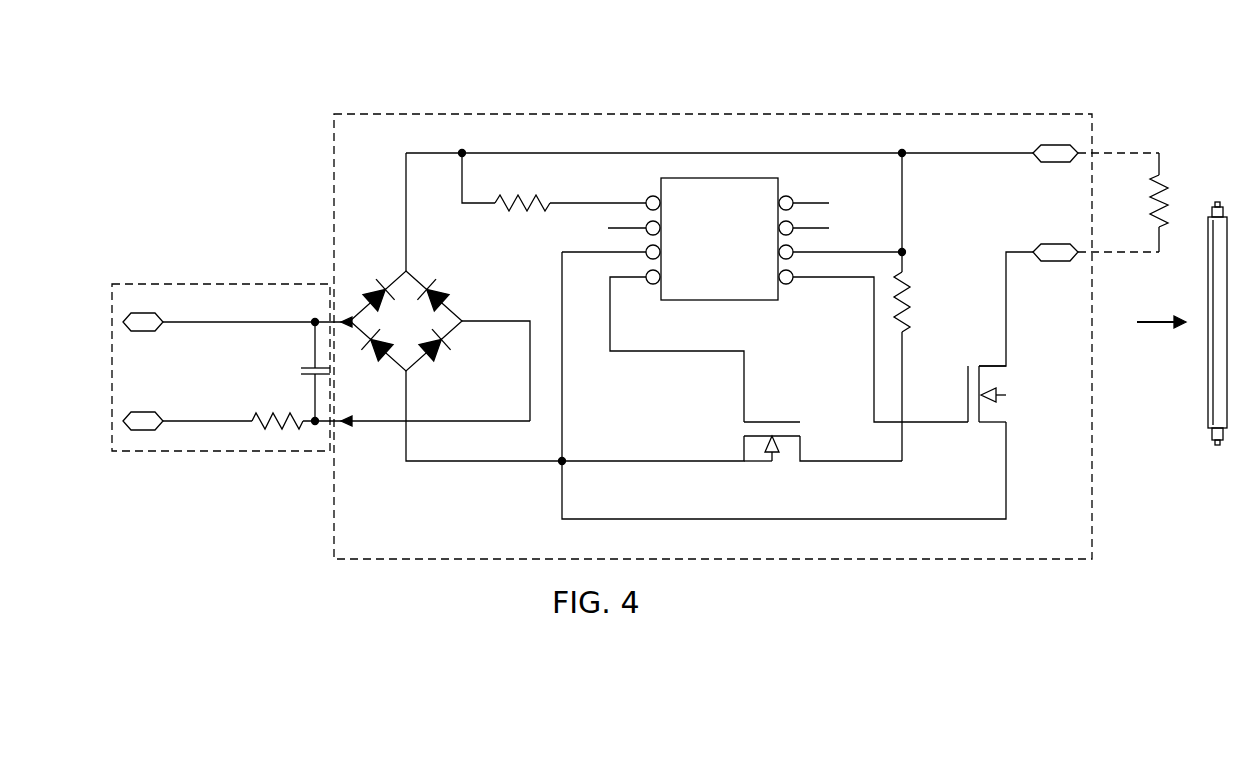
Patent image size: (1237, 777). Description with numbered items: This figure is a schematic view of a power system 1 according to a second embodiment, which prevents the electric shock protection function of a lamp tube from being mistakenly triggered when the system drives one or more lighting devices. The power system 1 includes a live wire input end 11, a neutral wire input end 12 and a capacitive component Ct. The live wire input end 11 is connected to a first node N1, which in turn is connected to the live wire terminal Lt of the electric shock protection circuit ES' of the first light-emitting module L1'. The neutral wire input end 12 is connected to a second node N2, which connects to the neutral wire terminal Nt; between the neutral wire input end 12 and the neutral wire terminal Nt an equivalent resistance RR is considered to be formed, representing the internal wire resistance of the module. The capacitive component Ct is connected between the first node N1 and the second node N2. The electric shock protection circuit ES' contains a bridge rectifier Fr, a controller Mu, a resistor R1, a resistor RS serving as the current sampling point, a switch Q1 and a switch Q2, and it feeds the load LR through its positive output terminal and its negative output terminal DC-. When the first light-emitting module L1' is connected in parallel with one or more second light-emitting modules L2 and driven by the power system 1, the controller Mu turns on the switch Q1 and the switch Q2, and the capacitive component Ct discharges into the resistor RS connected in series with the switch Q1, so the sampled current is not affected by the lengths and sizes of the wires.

The power system 1 is at (222, 248).
The live wire input end 11 is at (148, 332).
The neutral wire input end 12 is at (150, 412).
The first node N1 is at (256, 313).
The second node N2 is at (346, 435).
The capacitive component Ct is at (303, 371).
The equivalent resistance RR is at (277, 408).
The live wire terminal Lt is at (350, 314).
The neutral wire terminal Nt is at (352, 434).
The electric shock protection circuit ES' is at (713, 298).
The bridge rectifier Fr is at (430, 276).
The resistor R1 is at (522, 191).
The controller Mu is at (753, 300).
The resistor RS is at (920, 302).
The switch Q1 is at (732, 441).
The switch Q2 is at (1005, 394).
The negative output terminal DC- is at (1057, 268).
The first light-emitting module L1' is at (1130, 139).
The load LR is at (1178, 202).
The second light-emitting module L2 is at (1212, 416).